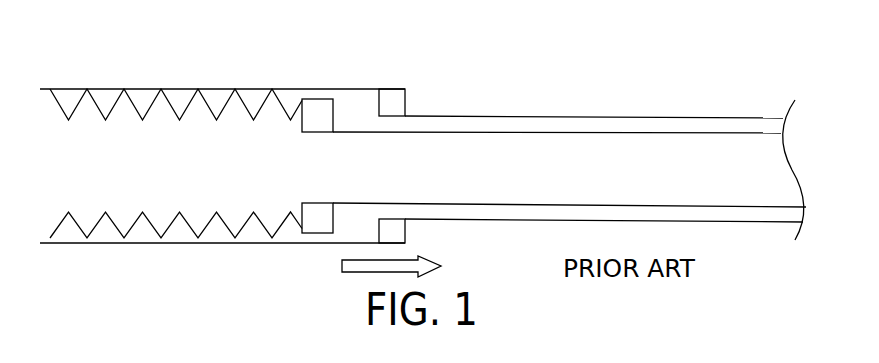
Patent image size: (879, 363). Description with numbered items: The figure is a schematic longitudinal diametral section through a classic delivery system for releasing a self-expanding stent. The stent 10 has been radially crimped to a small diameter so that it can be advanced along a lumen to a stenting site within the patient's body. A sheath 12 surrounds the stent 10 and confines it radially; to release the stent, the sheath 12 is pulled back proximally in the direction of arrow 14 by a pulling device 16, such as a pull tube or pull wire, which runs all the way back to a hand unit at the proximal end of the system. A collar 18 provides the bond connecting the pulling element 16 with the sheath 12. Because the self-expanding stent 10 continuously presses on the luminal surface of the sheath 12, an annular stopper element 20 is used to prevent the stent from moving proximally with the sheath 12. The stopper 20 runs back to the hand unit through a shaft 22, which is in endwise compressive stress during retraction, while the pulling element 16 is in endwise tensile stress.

The stent 10 is at (186, 103).
The sheath 12 is at (339, 89).
The arrow 14 is at (375, 265).
The pulling device 16 is at (536, 117).
The collar 18 is at (391, 89).
The stopper element 20 is at (318, 133).
The shaft 22 is at (538, 133).